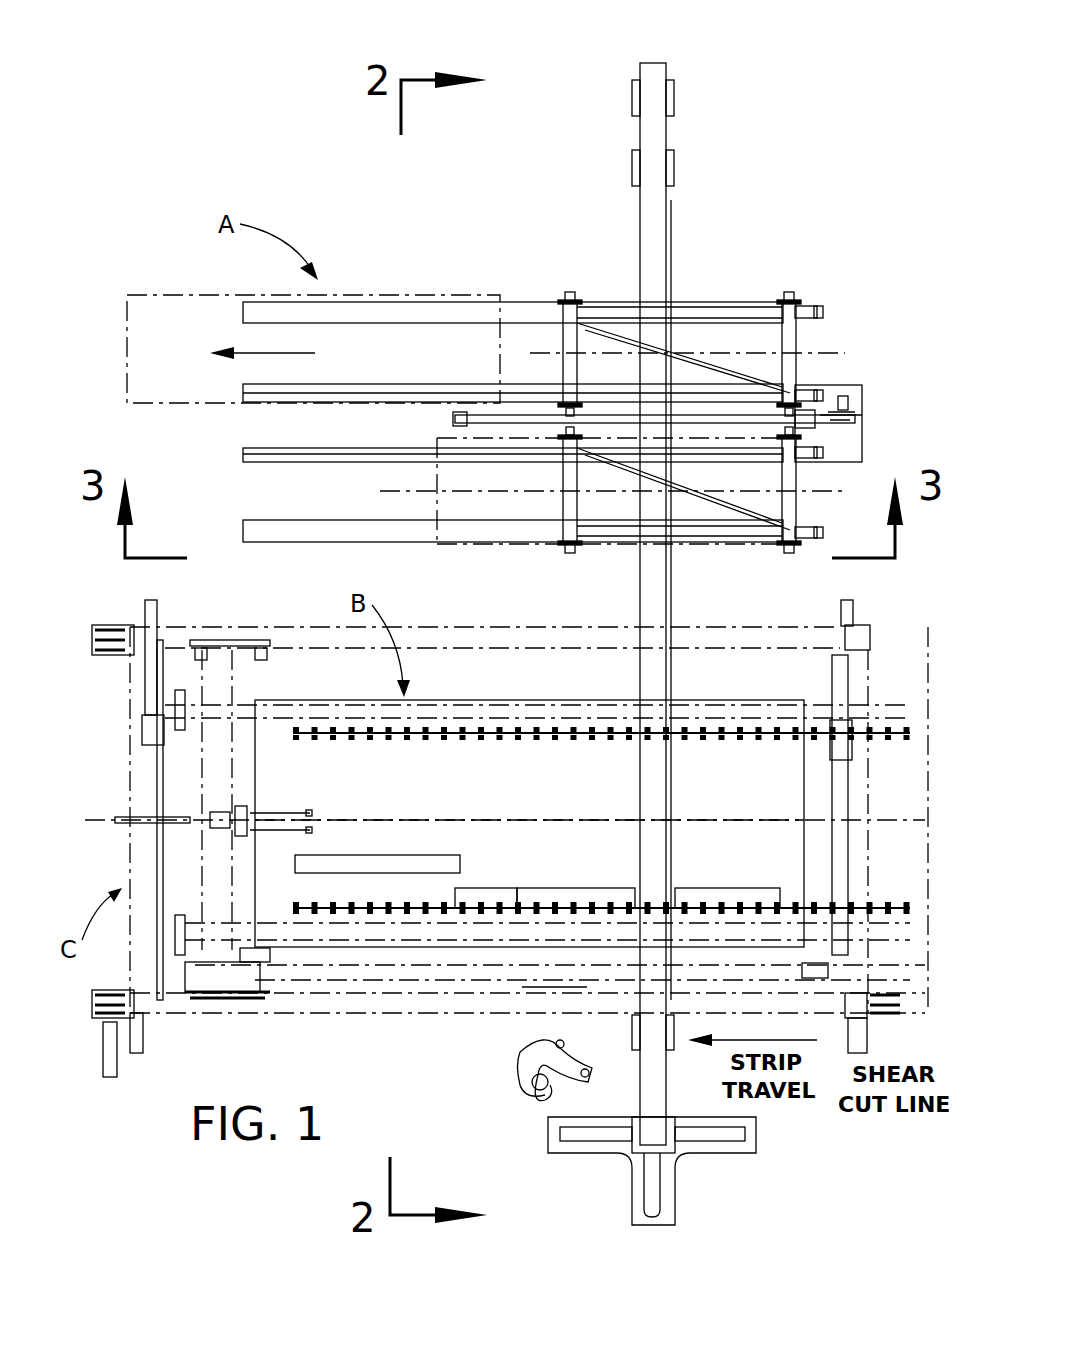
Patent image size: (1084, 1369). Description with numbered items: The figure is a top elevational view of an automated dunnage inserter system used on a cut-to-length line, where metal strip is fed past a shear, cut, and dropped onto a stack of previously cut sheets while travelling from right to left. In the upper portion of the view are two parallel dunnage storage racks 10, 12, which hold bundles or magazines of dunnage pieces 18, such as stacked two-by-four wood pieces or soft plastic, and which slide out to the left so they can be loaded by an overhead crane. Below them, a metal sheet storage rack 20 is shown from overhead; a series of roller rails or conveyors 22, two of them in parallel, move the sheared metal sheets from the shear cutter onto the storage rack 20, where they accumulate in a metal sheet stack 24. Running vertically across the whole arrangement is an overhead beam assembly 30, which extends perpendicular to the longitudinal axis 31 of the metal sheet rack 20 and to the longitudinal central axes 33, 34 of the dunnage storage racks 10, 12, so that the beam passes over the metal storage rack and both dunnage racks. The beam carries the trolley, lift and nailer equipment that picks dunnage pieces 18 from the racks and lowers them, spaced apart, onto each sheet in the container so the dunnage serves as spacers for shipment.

The dunnage storage rack 10 is at (570, 290).
The dunnage storage rack 12 is at (568, 555).
The dunnage pieces 18 is at (465, 862).
The metal sheet storage rack 20 is at (230, 970).
The roller rails 22 is at (320, 740).
The metal sheet stack 24 is at (278, 772).
The overhead beam assembly 30 is at (668, 255).
The longitudinal axes of the metal sheet rack 31 is at (455, 820).
The longitudinal central axis of the dunnage storage rack 33 is at (830, 353).
The longitudinal central axis of the dunnage storage rack 34 is at (820, 494).